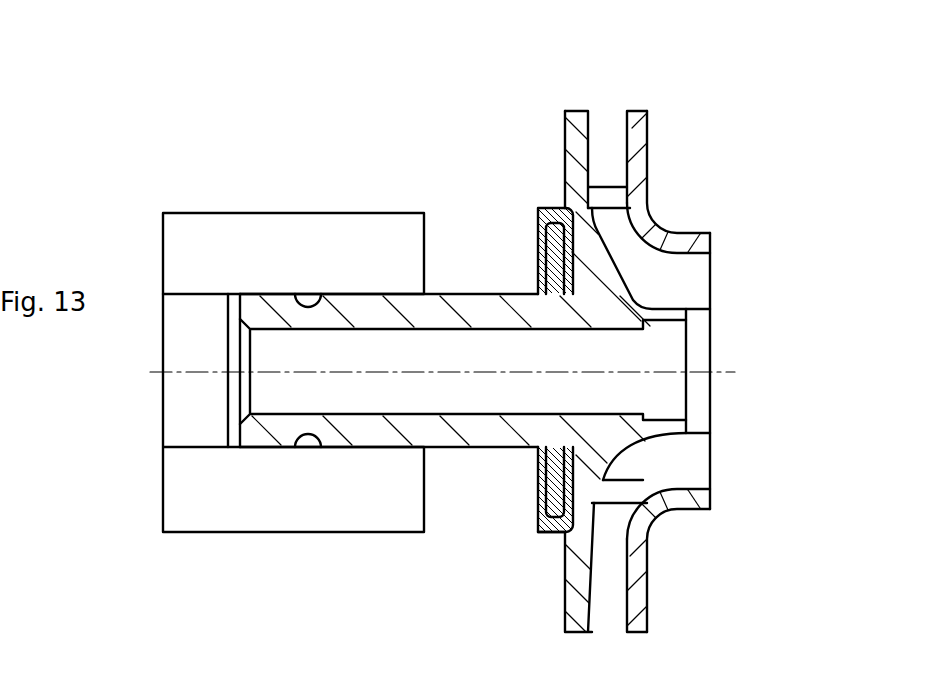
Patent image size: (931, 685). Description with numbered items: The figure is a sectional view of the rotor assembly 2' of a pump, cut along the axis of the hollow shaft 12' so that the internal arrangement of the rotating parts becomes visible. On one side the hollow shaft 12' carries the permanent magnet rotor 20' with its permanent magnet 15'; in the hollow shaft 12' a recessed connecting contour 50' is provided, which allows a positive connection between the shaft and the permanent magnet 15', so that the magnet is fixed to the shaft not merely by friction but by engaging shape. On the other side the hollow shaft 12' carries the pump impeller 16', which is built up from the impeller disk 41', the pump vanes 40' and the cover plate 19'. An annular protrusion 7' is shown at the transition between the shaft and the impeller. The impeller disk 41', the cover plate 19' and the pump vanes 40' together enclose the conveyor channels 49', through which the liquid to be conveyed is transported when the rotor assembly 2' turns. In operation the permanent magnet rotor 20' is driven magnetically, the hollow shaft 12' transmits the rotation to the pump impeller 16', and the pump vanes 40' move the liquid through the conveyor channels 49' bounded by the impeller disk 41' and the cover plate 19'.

The rotor assembly 2' is at (483, 330).
The annular protrusion 7' is at (526, 394).
The hollow shaft 12' is at (463, 326).
The permanent magnet 15' is at (293, 253).
The pump impeller 16' is at (606, 120).
The cover plate 19' is at (639, 367).
The permanent magnet rotor 20' is at (293, 304).
The pump vanes 40' is at (685, 377).
The impeller disk 41' is at (542, 145).
The conveyor channels 49' is at (704, 344).
The recessed connecting contour 50' is at (312, 451).